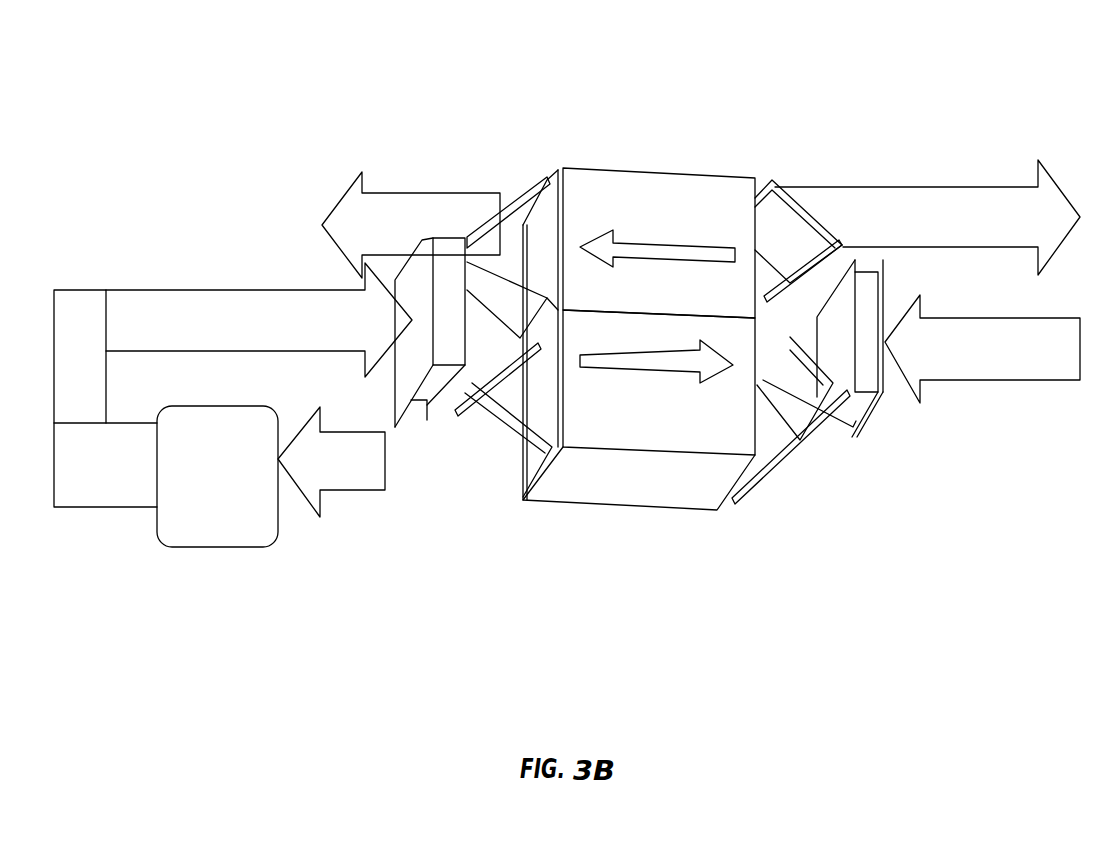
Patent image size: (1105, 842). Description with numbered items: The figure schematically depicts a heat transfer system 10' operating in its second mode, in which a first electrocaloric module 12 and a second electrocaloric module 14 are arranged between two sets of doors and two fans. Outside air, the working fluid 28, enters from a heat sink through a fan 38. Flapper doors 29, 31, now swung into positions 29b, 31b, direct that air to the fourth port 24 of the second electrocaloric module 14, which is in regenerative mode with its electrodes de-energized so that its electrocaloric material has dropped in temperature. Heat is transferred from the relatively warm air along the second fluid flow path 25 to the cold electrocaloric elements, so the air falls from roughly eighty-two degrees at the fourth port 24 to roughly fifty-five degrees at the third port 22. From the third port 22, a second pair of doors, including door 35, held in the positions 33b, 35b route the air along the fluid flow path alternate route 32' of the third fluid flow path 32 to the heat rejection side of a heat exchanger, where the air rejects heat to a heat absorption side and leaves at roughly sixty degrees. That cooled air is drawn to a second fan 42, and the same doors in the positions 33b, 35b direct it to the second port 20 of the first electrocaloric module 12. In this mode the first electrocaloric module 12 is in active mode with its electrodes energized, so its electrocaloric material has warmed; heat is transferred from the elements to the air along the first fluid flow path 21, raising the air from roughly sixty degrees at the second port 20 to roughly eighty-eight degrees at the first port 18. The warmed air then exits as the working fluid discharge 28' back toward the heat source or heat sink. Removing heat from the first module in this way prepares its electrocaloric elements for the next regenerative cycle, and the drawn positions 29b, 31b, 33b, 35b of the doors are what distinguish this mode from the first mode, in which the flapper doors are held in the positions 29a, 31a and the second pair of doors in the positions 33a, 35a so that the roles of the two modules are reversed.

The HVAC system 10' is at (567, 334).
The first electrocaloric module 12 is at (639, 467).
The second electrocaloric module 14 is at (656, 272).
The first port 18 is at (827, 474).
The second port 20 is at (526, 468).
The first fluid flow path 21 is at (673, 373).
The third port 22 is at (467, 299).
The fourth port 24 is at (882, 197).
The second fluid flow path 25 is at (683, 243).
The working fluid 28 is at (982, 381).
The working fluid discharge 28' is at (927, 199).
The flapper door 29 is at (882, 271).
The flapper door position 29a is at (797, 297).
The flapper door position 29b is at (755, 272).
The flapper door 31 is at (792, 468).
The flapper door position 31a is at (783, 457).
The flapper door position 31b is at (848, 435).
The third fluid flow path 32 is at (234, 394).
The fluid flow path alternate route 32' is at (391, 210).
The door position 33a is at (513, 363).
The door position 33b is at (462, 410).
The door 35 is at (479, 176).
The door position 35a is at (507, 205).
The door position 35b is at (500, 242).
The fan 38 is at (870, 408).
The fan 42 is at (393, 392).